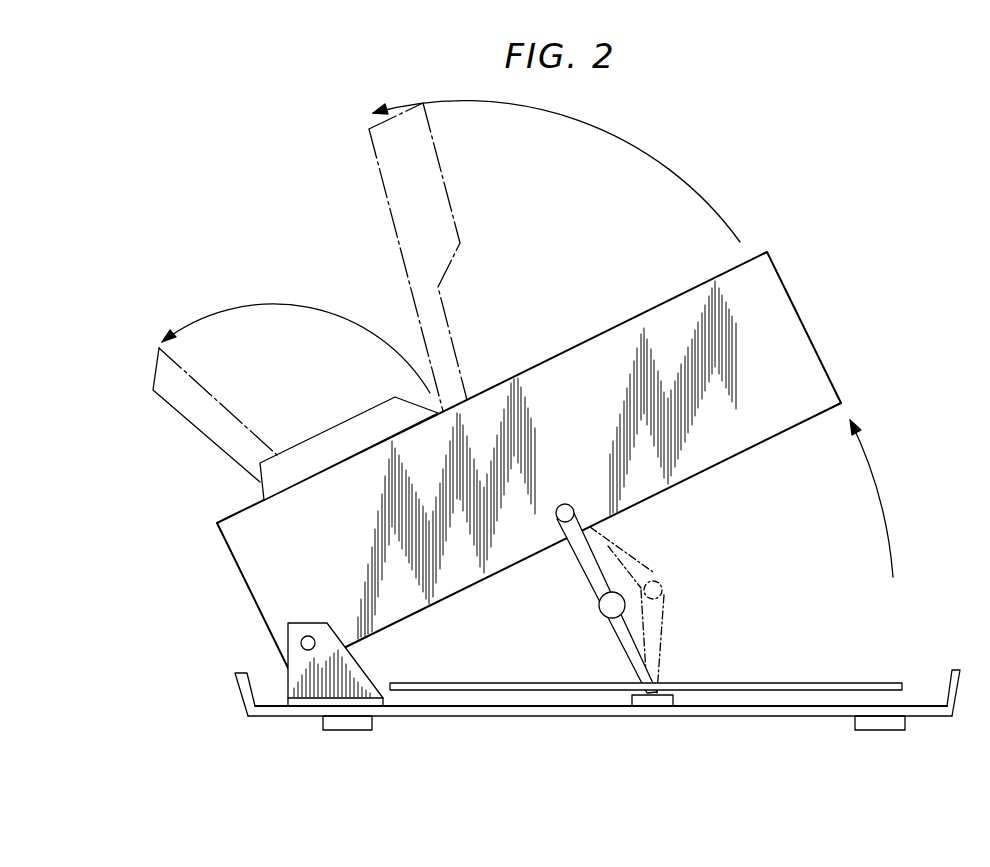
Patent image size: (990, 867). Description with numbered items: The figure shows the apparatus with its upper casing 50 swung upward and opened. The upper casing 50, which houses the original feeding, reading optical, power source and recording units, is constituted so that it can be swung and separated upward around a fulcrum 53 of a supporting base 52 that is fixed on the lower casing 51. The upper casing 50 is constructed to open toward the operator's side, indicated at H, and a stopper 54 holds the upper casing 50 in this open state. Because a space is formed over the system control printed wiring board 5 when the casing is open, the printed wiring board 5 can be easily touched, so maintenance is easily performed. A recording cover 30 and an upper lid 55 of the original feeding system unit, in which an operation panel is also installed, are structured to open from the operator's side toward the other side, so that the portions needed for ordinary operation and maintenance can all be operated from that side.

The system control printed wiring board 5 is at (787, 690).
The recording cover 30 is at (387, 193).
The upper casing 50 is at (787, 297).
The lower casing 51 is at (713, 713).
The supporting base 52 is at (313, 697).
The fulcrum 53 is at (300, 646).
The stopper 54 is at (628, 652).
The upper lid 55 is at (185, 412).